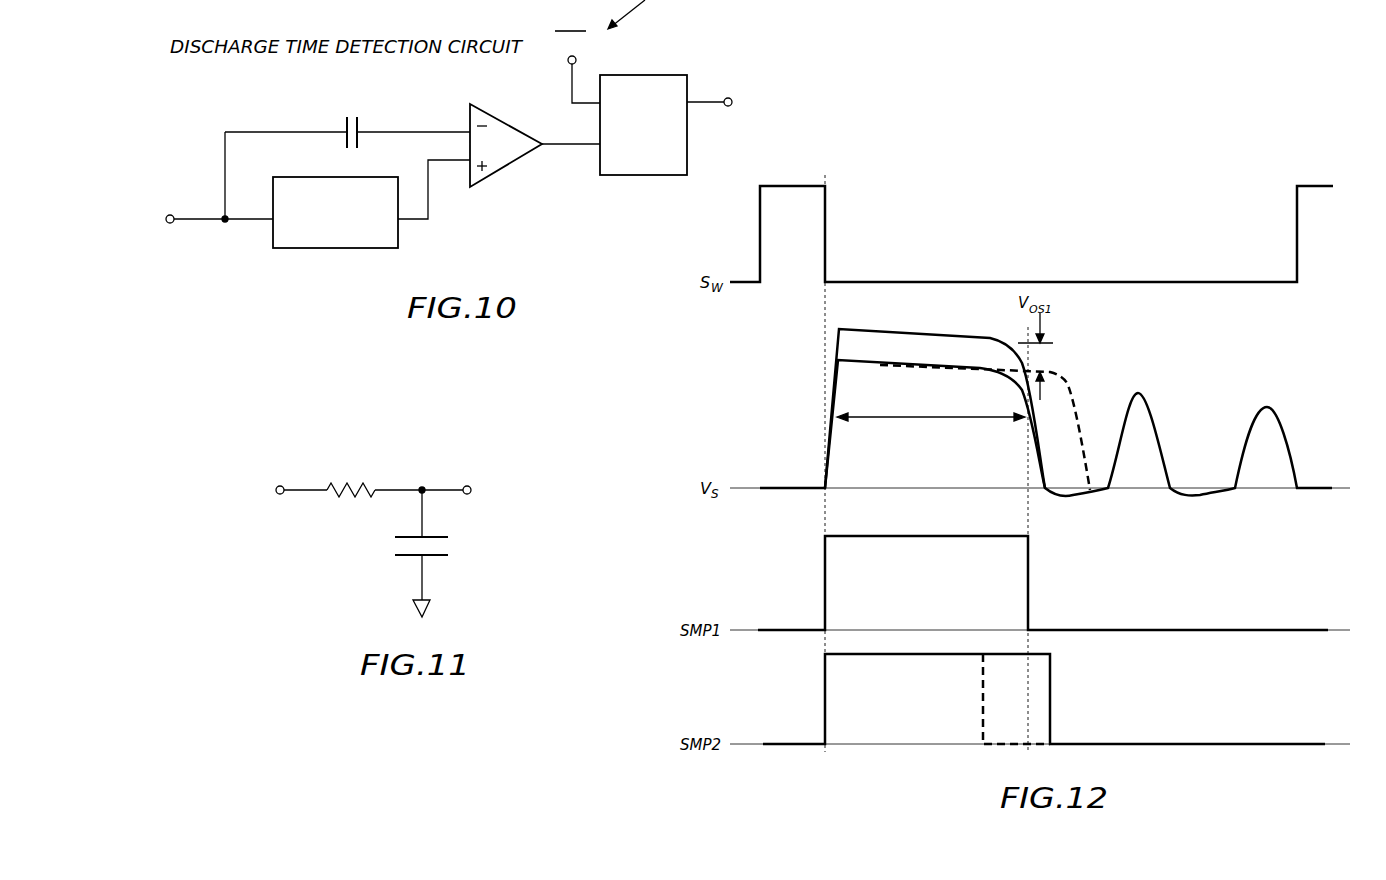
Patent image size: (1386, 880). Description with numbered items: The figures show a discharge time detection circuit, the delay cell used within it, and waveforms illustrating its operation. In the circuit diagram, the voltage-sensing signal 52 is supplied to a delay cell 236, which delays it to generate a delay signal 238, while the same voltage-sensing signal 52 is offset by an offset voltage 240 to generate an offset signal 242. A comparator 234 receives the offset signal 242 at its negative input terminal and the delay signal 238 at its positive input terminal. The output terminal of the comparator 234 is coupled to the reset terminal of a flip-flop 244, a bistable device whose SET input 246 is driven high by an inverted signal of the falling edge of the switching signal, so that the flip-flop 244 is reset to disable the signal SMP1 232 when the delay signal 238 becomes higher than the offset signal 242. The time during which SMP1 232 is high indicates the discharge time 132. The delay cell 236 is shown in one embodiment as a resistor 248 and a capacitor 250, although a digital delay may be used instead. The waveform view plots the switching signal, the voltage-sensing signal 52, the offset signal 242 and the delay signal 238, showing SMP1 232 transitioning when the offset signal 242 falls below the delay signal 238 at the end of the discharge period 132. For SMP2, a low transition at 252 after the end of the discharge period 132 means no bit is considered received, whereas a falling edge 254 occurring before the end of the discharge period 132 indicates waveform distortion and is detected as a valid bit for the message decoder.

In FIG. 10, the voltage-sensing signal 52 is at (204, 221).
In FIG. 11, the voltage-sensing signal 52 is at (300, 492).
In FIG. 12, the voltage-sensing signal 52 is at (880, 366).
In FIG. 12, the discharge time 132 is at (982, 419).
In FIG. 10, the signal SMP1 232 is at (713, 100).
In FIG. 10, the comparator 234 is at (510, 153).
In FIG. 10, the delay cell 236 is at (317, 236).
In FIG. 11, the delay cell 236 is at (461, 454).
In FIG. 10, the delay signal 238 is at (430, 200).
In FIG. 11, the delay signal 238 is at (450, 490).
In FIG. 12, the delay signal 238 is at (1073, 405).
In FIG. 10, the offset voltage 240 is at (363, 127).
In FIG. 10, the offset signal 242 is at (410, 132).
In FIG. 12, the offset signal 242 is at (880, 331).
In FIG. 10, the flip-flop 244 is at (655, 131).
In FIG. 10, the SET input 246 is at (575, 75).
In FIG. 11, the resistor 248 is at (363, 488).
In FIG. 11, the capacitor 250 is at (440, 537).
In FIG. 12, the SMP2 low transition 252 is at (1050, 683).
In FIG. 12, the falling edge of SMP2 254 is at (985, 678).